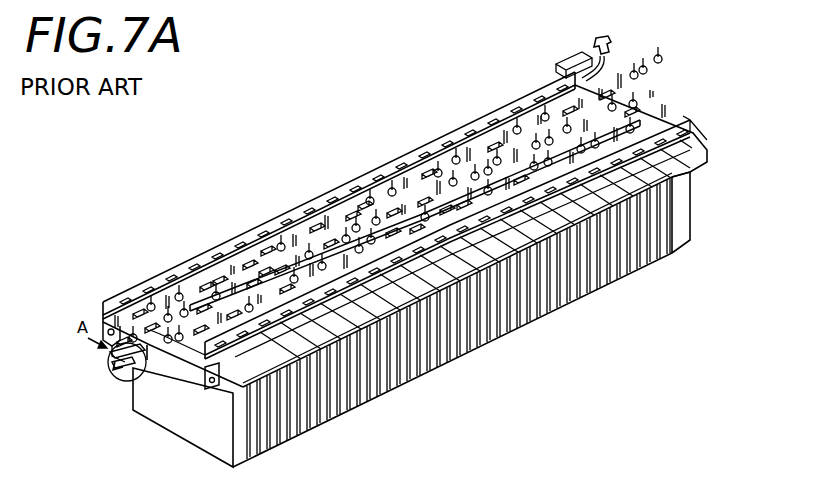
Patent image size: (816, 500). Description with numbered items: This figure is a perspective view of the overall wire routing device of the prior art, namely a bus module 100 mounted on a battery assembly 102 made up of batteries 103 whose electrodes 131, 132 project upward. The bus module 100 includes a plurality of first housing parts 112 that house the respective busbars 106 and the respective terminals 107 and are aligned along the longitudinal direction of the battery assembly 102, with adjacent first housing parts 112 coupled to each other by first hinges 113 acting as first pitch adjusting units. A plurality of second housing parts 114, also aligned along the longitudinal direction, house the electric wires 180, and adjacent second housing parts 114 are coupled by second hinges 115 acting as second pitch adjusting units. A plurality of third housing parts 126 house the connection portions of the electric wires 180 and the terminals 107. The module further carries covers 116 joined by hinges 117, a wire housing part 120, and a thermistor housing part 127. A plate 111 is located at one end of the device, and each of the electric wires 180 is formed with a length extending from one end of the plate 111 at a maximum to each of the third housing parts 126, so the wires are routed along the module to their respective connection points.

The bus module 100 is at (258, 212).
The battery assembly 102 is at (673, 222).
The batteries 103 is at (268, 440).
The busbars 106 is at (319, 189).
The terminals 107 is at (357, 176).
The plate 111 is at (127, 298).
The first housing parts 112 is at (229, 240).
The first hinges 113 is at (289, 212).
The second housing parts 114 is at (193, 258).
The second hinges 115 is at (600, 268).
The covers 116 is at (473, 335).
The hinges 117 is at (428, 336).
The wire housing part 120 is at (145, 278).
The third housing parts 126 is at (453, 118).
The thermistor housing part 127 is at (548, 300).
The electrode 131 is at (414, 143).
The electrode 132 is at (384, 162).
The electric wires 180 is at (597, 52).